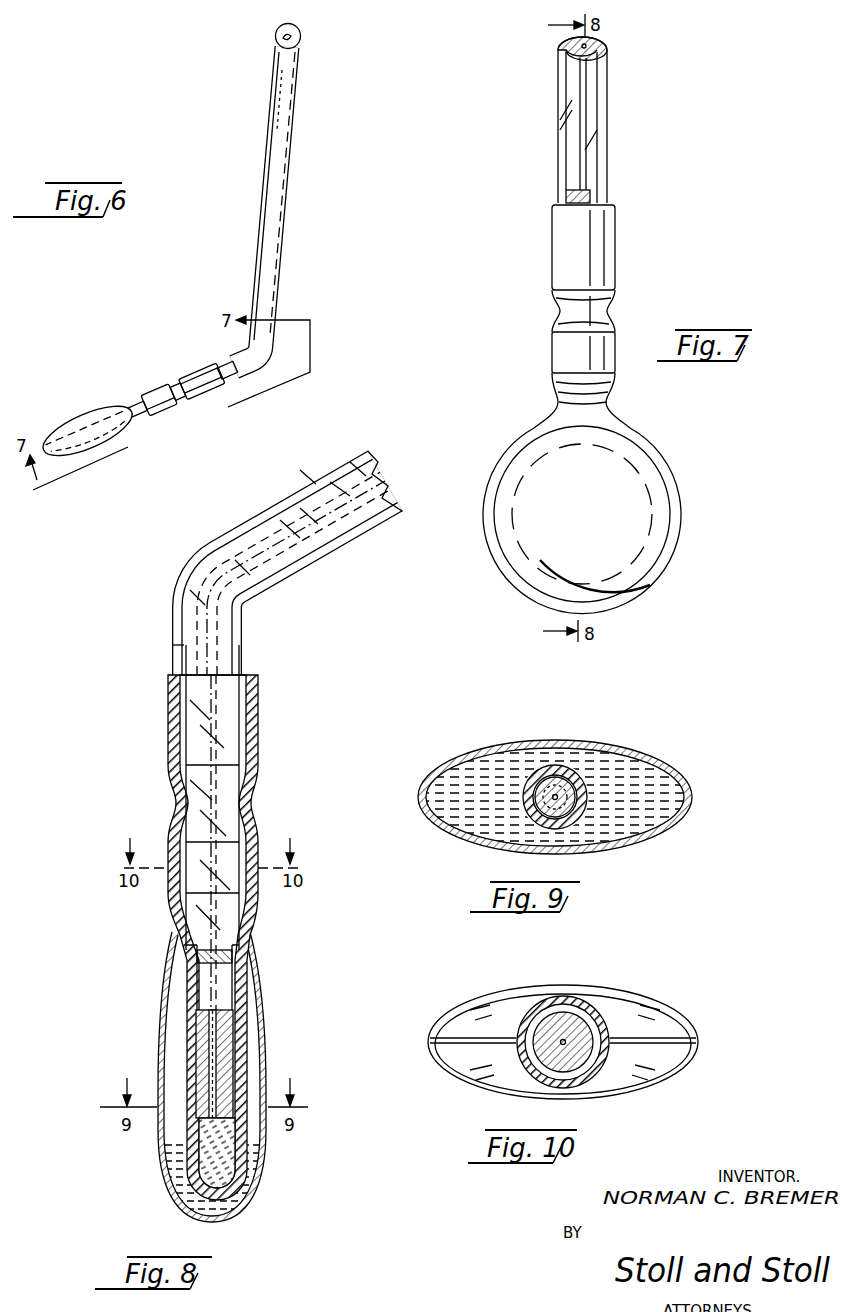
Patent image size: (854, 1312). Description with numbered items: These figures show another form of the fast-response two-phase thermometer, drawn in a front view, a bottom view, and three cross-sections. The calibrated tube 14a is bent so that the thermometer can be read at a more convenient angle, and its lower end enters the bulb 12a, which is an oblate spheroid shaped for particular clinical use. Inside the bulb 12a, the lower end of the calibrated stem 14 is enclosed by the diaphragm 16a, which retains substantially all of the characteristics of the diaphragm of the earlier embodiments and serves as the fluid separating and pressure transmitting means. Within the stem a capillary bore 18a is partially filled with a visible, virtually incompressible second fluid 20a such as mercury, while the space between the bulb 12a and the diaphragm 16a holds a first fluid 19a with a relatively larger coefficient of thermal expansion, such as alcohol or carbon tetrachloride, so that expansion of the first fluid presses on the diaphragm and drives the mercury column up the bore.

In FIG. 6, the bulb 12a is at (96, 406).
In FIG. 7, the bulb 12a is at (658, 527).
In FIG. 8, the bulb 12a is at (262, 1008).
In FIG. 9, the bulb 12a is at (690, 797).
In FIG. 10, the bulb 12a is at (690, 1022).
In FIG. 7, the calibrated stem 14 is at (590, 163).
In FIG. 6, the calibrated tube 14a is at (283, 208).
In FIG. 8, the calibrated tube 14a is at (338, 545).
In FIG. 9, the calibrated tube 14a is at (578, 777).
In FIG. 8, the diaphragm 16a is at (246, 1068).
In FIG. 9, the diaphragm 16a is at (555, 767).
In FIG. 10, the diaphragm 16a is at (598, 1015).
In FIG. 7, the plug 18a is at (609, 49).
In FIG. 8, the plug 18a is at (205, 1045).
In FIG. 9, the plug 18a is at (580, 815).
In FIG. 10, the plug 18a is at (560, 1015).
In FIG. 8, the liquid 19a is at (225, 1200).
In FIG. 9, the liquid 19a is at (470, 775).
In FIG. 8, the absorbent filler 20a is at (236, 1160).
In FIG. 9, the absorbent filler 20a is at (541, 770).